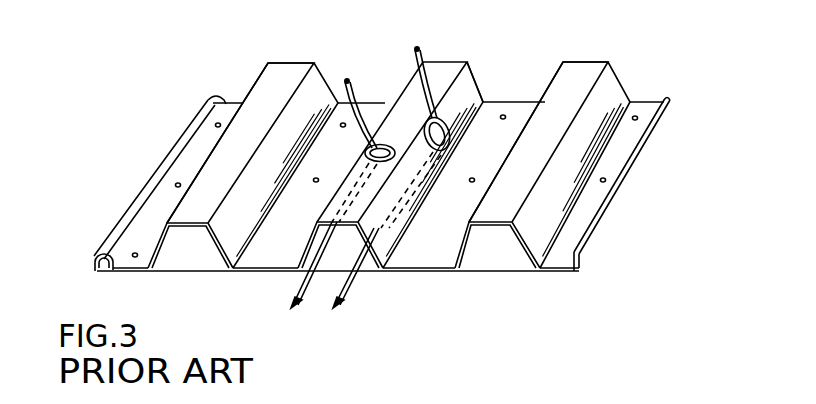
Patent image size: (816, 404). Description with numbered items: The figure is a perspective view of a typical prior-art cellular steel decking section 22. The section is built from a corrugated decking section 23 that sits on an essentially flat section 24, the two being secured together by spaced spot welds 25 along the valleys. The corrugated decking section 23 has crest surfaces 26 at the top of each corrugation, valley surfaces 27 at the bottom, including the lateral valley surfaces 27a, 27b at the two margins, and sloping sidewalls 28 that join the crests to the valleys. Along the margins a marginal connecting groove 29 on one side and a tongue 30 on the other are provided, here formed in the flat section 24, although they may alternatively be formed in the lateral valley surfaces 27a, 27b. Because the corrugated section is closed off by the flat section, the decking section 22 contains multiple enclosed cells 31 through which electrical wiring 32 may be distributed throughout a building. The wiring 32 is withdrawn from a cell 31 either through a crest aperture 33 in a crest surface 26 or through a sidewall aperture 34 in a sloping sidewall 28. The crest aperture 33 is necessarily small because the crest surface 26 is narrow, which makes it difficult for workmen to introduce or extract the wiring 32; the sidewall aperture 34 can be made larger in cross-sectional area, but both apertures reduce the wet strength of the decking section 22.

The cellular steel decking section 22 is at (637, 70).
The corrugated decking section 23 is at (245, 58).
The flat section 24 is at (165, 284).
The spot welds 25 is at (270, 255).
The crest surfaces 26 is at (293, 68).
The valley surfaces 27 is at (246, 262).
The lateral valley surface 27a is at (236, 105).
The lateral valley surface 27b is at (647, 108).
The sloping sidewalls 28 is at (313, 80).
The marginal connecting groove 29 is at (163, 163).
The tongue 30 is at (641, 157).
The enclosed cells 31 is at (197, 258).
The electrical wiring 32 is at (307, 290).
The crest aperture 33 is at (385, 152).
The sidewall aperture 34 is at (474, 93).